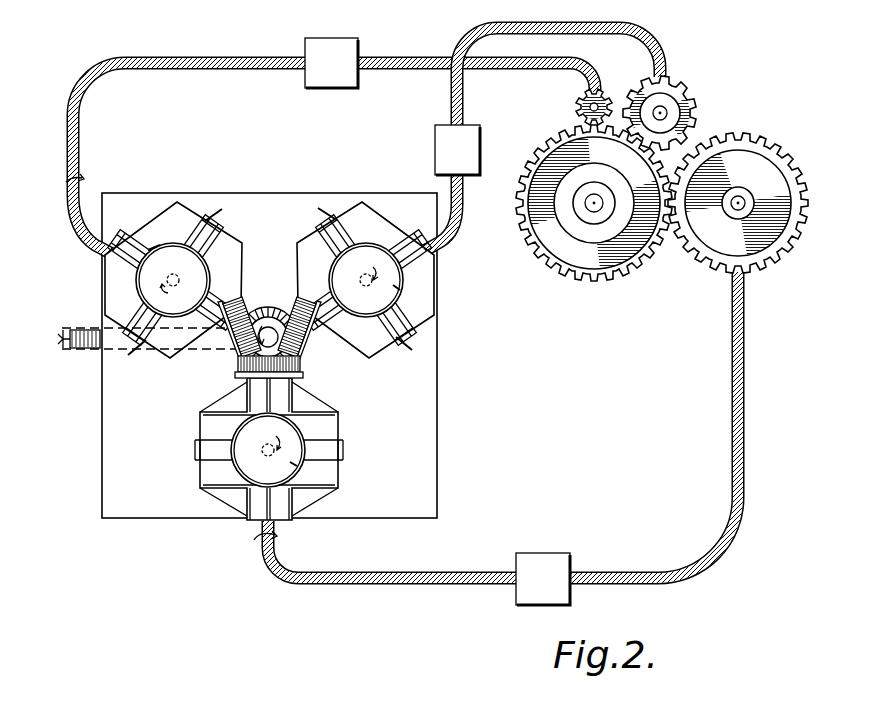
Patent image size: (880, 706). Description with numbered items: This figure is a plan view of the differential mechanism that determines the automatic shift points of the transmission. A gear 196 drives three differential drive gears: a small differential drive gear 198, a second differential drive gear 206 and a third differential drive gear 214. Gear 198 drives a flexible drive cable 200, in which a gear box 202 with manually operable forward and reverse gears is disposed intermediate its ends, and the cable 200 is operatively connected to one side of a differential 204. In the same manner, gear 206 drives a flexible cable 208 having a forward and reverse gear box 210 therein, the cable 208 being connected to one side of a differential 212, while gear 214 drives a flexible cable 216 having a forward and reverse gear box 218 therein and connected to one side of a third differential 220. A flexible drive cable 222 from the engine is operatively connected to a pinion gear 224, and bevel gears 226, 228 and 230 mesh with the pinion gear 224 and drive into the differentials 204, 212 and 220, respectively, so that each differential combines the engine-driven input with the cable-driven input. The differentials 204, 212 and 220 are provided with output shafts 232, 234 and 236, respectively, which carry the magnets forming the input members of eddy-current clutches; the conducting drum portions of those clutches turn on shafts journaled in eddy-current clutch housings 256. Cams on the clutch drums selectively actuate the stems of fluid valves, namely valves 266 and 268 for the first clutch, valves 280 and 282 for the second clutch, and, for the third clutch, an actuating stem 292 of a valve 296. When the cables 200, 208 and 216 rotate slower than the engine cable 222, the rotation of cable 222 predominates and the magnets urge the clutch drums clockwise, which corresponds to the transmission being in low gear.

The gear 196 is at (600, 282).
The small differential drive gear 198 is at (578, 110).
The flexible drive cable 200 is at (412, 57).
The gear box 202 is at (326, 43).
The differential 204 is at (181, 203).
The second differential drive gear 206 is at (692, 92).
The flexible cable 208 is at (652, 35).
The forward and reverse gear box 210 is at (436, 150).
The differential 212 is at (353, 207).
The third differential drive gear 214 is at (772, 146).
The flexible cable 216 is at (740, 408).
The forward and reverse gear box 218 is at (547, 558).
The third differential 220 is at (218, 482).
The flexible drive cable 222 is at (90, 348).
The pinion gear 224 is at (243, 358).
The bevel gear 226 is at (244, 305).
The bevel gear 228 is at (320, 350).
The bevel gear 230 is at (243, 377).
The output shaft 232 is at (175, 292).
The output shaft 234 is at (364, 268).
The output shaft 236 is at (263, 436).
The eddy-current clutch housing 256 is at (160, 246).
The fluid valve 266 is at (216, 213).
The fluid valve 268 is at (137, 344).
The fluid valve 280 is at (328, 215).
The fluid valve 282 is at (406, 347).
The actuating stem 292 is at (195, 449).
The valve 296 is at (340, 449).